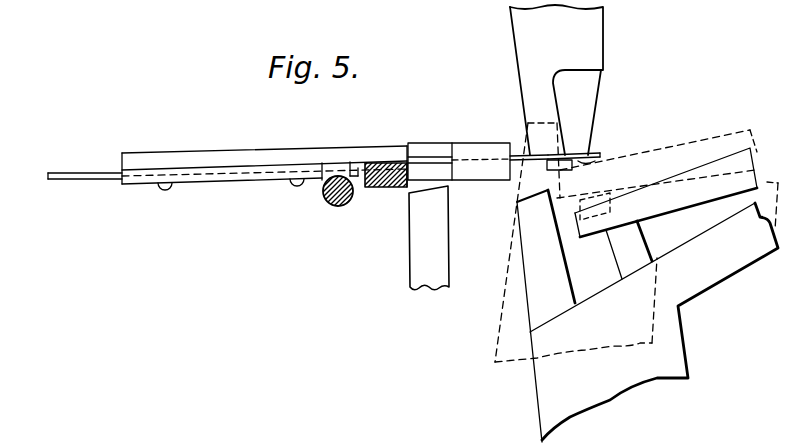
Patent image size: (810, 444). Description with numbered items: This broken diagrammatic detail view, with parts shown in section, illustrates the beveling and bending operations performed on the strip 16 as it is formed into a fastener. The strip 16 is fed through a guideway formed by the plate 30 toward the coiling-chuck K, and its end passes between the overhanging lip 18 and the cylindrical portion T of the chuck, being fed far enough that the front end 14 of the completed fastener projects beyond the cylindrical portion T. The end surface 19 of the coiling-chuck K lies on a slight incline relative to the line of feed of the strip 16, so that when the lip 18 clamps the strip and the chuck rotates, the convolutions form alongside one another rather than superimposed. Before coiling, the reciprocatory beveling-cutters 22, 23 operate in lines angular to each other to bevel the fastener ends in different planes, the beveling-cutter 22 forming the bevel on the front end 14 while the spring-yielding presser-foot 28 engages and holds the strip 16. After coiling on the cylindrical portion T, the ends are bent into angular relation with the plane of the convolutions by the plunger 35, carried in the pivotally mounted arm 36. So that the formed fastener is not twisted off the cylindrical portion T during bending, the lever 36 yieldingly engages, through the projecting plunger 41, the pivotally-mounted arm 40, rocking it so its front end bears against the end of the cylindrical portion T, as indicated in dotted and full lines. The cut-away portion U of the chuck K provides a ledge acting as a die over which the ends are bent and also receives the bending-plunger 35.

The front end of the fastener 14 is at (595, 161).
The strip 16 is at (75, 175).
The lip 18 is at (572, 153).
The end surface of the coiling-chuck 19 is at (535, 155).
The beveling-cutter 22 is at (382, 188).
The beveling-cutter 23 is at (422, 258).
The presser-foot 28 is at (327, 193).
The plate 30 is at (203, 185).
The plunger 35 is at (532, 250).
The arm 36 is at (711, 284).
The pivotally-mounted arm 40 is at (668, 195).
The projecting plunger 41 is at (627, 255).
The coiling-chuck K is at (598, 34).
The cut-away portion U is at (593, 103).
The cylindrical portion T is at (545, 178).